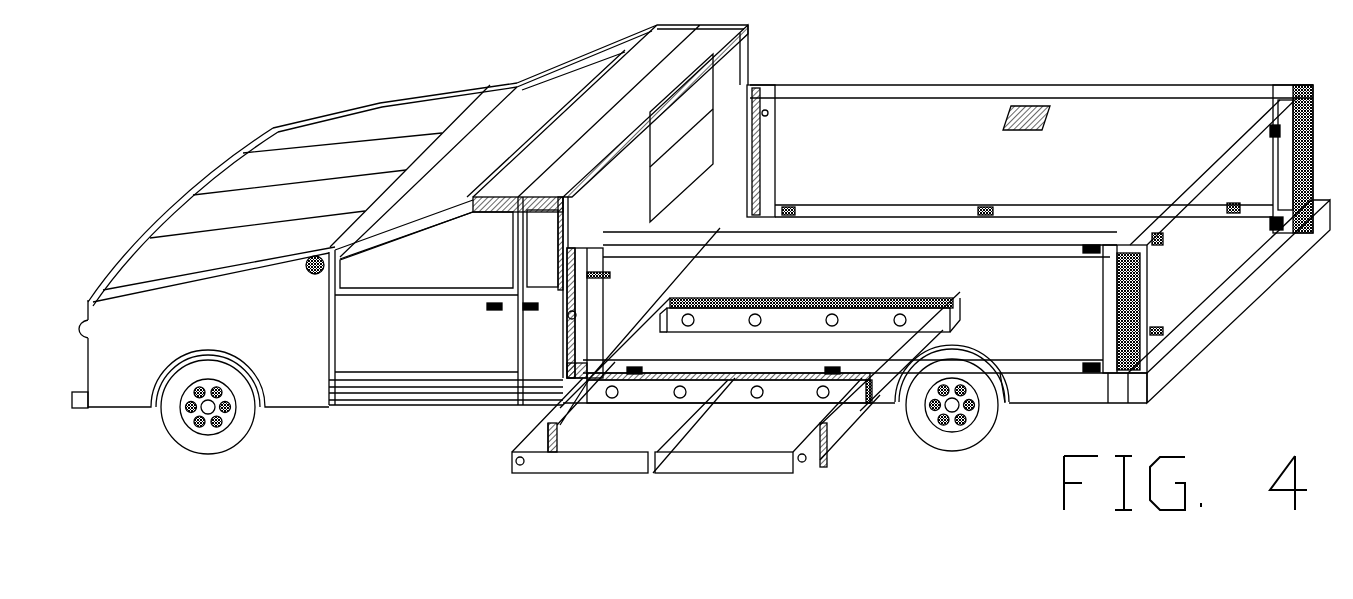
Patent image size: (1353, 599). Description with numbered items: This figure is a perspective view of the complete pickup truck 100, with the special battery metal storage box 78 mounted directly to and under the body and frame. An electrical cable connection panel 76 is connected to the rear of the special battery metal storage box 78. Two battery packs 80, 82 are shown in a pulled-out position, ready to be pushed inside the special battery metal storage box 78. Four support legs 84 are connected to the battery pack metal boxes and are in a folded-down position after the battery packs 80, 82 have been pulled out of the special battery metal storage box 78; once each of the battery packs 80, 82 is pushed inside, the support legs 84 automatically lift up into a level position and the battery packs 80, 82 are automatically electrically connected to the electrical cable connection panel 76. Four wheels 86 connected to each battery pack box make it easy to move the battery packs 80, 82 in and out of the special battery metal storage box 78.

The pickup truck 100 is at (332, 160).
The electrical cable connection panel 76 is at (947, 307).
The special battery metal storage box 78 is at (957, 333).
The battery pack 80 is at (511, 449).
The battery pack 82 is at (770, 463).
The support legs 84 is at (828, 464).
The wheels 86 is at (860, 411).